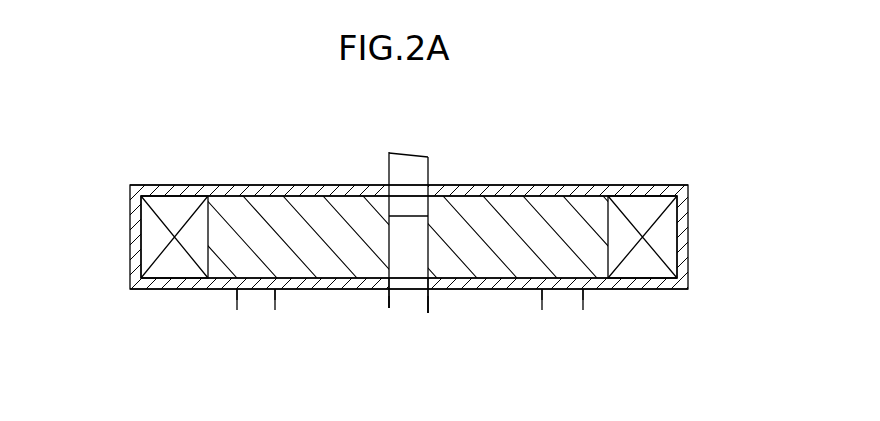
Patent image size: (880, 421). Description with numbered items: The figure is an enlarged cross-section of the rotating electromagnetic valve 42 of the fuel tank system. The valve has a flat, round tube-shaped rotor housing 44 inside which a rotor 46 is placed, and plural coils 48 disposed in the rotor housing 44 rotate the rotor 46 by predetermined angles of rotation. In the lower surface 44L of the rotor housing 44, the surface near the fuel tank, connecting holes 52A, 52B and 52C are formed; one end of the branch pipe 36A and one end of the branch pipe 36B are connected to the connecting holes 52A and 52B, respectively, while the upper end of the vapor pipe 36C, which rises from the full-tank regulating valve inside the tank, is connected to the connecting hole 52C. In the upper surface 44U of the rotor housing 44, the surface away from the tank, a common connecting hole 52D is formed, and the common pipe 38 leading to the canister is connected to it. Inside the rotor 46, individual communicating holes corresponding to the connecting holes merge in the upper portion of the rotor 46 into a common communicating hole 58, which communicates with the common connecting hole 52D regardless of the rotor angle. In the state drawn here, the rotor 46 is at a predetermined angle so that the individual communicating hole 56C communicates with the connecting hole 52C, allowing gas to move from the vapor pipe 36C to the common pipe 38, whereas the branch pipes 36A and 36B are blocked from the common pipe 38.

The rotating electromagnetic valve 42 is at (617, 150).
The rotor housing 44 is at (129, 187).
The upper surface 44U is at (293, 185).
The lower surface 44L is at (303, 289).
The rotor 46 is at (505, 185).
The coils 48 is at (152, 240).
The common pipe 38 is at (389, 170).
The common communicating hole 58 is at (429, 183).
The common connecting hole 52D is at (396, 189).
The connecting hole 52C is at (413, 289).
The individual communicating hole 56C is at (428, 245).
The branch pipe 36A is at (283, 308).
The branch pipe 36B is at (537, 308).
The vapor pipe 36C is at (436, 308).
The connecting hole 52A is at (270, 283).
The connecting hole 52B is at (557, 283).